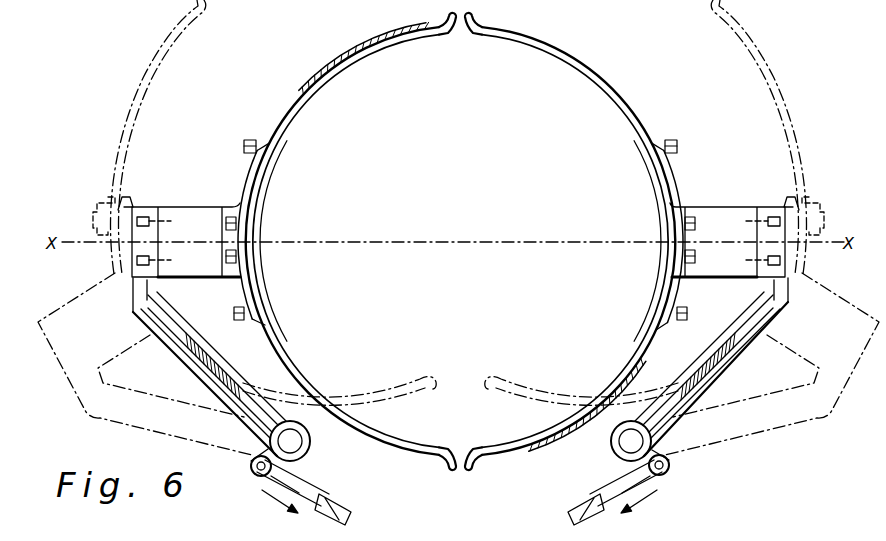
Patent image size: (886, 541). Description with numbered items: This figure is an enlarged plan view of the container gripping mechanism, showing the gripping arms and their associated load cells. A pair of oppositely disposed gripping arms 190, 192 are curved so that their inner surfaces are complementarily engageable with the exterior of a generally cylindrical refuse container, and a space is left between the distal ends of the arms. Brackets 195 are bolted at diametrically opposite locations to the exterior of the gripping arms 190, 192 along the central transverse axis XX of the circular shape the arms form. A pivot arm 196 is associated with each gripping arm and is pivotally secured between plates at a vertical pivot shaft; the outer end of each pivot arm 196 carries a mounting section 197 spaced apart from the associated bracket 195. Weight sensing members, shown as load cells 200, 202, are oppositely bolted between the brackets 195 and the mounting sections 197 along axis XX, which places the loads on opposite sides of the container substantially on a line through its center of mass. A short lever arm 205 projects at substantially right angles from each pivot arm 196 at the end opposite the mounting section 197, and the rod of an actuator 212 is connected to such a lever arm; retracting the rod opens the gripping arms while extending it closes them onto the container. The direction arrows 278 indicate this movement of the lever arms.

The gripping arm 190 is at (299, 105).
The gripping arm 192 is at (605, 97).
The bracket 195 is at (664, 262).
The pivot arm 196 is at (781, 400).
The mounting section 197 is at (789, 300).
The load cell 200 is at (725, 222).
The load cell 202 is at (206, 208).
The lever arm 205 is at (670, 448).
The actuator 212 is at (588, 496).
The arrow direction 278 is at (766, 532).